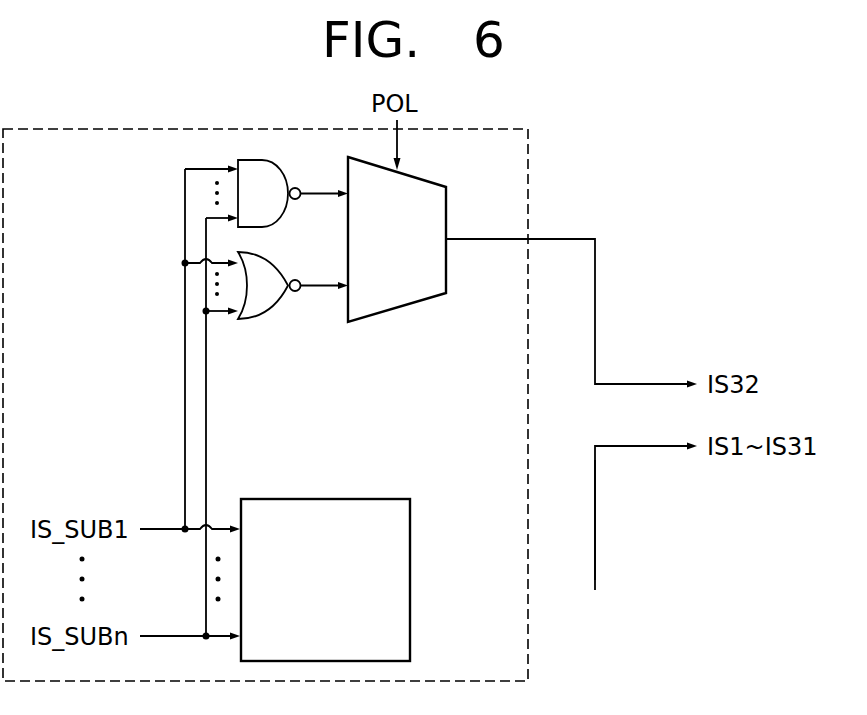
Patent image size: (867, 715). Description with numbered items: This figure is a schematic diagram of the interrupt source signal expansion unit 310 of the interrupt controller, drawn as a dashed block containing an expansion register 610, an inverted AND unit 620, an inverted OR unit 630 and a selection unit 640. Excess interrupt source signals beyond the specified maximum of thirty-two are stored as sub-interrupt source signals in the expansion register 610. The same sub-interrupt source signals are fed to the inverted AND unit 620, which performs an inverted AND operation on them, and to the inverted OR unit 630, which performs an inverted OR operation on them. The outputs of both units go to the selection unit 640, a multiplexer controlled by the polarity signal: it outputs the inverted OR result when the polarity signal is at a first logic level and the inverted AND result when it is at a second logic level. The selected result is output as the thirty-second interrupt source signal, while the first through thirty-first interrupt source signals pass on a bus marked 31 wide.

The interrupt source signal expansion unit 310 is at (528, 156).
The expansion register 610 is at (323, 498).
The inverted AND unit 620 is at (285, 212).
The inverted OR unit 630 is at (273, 313).
The selection unit 640 is at (408, 305).
The 31-bit bus width 31 is at (603, 508).